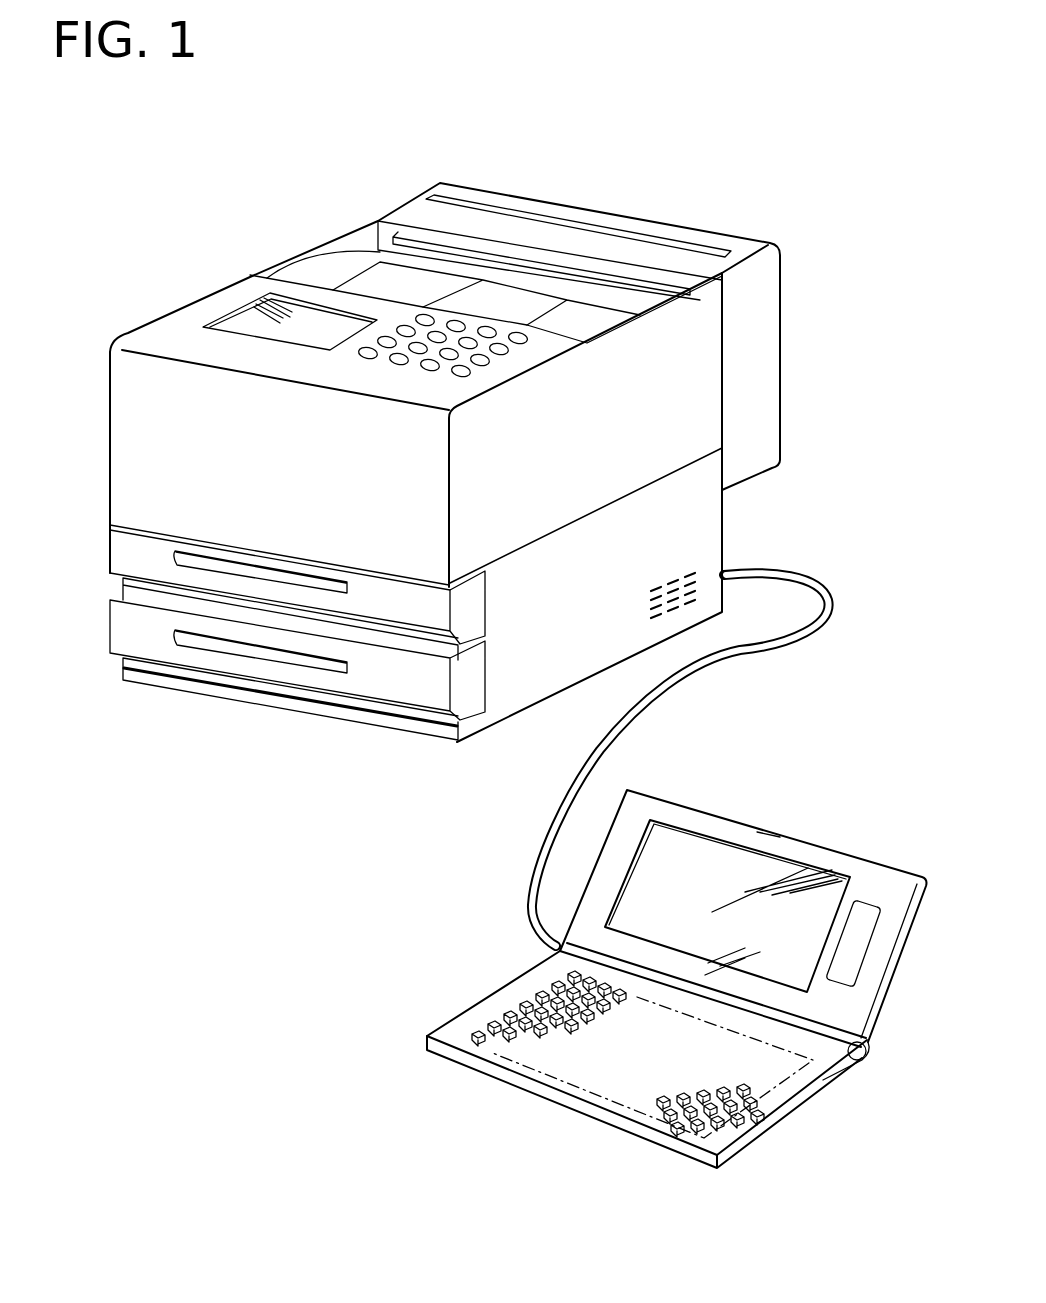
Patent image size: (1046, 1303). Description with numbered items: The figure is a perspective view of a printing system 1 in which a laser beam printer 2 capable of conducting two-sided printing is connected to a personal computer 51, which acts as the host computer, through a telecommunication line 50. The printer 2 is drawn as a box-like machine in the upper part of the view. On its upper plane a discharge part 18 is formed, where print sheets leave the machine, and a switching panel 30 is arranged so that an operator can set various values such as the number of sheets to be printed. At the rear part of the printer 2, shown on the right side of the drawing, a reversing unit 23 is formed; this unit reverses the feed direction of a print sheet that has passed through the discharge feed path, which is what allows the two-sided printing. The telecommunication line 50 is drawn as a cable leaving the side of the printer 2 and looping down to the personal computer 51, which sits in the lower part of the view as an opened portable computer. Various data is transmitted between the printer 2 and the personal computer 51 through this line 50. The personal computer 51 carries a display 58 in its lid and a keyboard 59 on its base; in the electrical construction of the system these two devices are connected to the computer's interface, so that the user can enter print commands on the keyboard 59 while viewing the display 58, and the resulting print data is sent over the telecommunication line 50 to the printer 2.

The printing system 1 is at (813, 318).
The laser beam printer 2 is at (190, 268).
The discharge part 18 is at (347, 262).
The reversing unit 23 is at (592, 217).
The switching panel 30 is at (360, 356).
The telecommunication line 50 is at (562, 800).
The personal computer 51 is at (512, 945).
The display 58 is at (706, 880).
The keyboard 59 is at (530, 998).